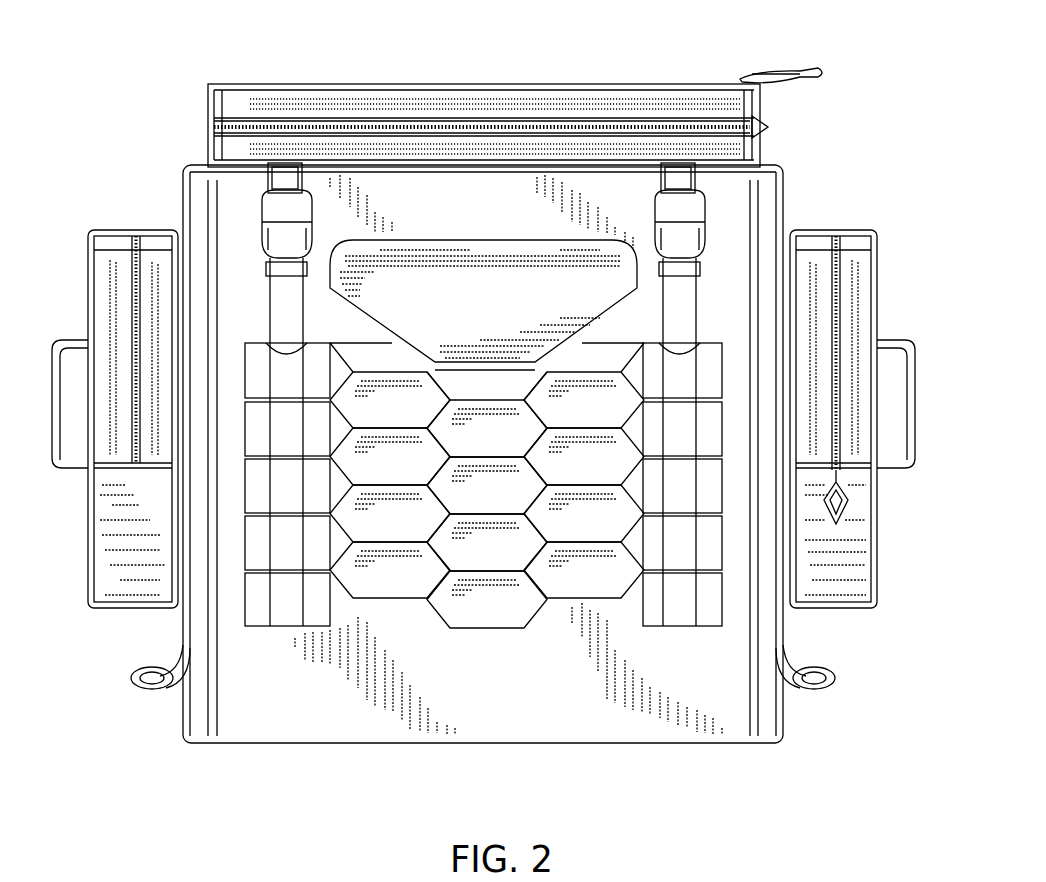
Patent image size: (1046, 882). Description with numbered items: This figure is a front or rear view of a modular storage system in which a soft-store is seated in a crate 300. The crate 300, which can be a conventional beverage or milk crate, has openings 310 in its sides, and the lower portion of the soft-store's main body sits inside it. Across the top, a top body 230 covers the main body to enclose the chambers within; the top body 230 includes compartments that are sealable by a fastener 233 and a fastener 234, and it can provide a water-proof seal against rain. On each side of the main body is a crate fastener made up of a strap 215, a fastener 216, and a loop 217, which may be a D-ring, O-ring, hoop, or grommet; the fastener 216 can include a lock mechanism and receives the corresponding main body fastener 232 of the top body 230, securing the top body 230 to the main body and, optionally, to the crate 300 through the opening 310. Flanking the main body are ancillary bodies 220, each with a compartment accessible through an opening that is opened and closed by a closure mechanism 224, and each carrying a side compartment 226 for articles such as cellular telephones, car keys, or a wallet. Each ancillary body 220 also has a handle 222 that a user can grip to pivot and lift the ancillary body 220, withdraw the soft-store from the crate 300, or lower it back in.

The crate 300 is at (475, 693).
The opening 310 is at (486, 323).
The top body 230 is at (580, 95).
The fastener 233 is at (402, 127).
The fastener 234 is at (797, 70).
The main body fastener 232 is at (282, 184).
The fastener 216 is at (283, 233).
The loop 217 is at (278, 347).
The strap 215 is at (280, 377).
The ancillary body 220 is at (160, 257).
The side compartment 226 is at (77, 482).
The handle 222 is at (155, 682).
The closure mechanism 224 is at (837, 515).